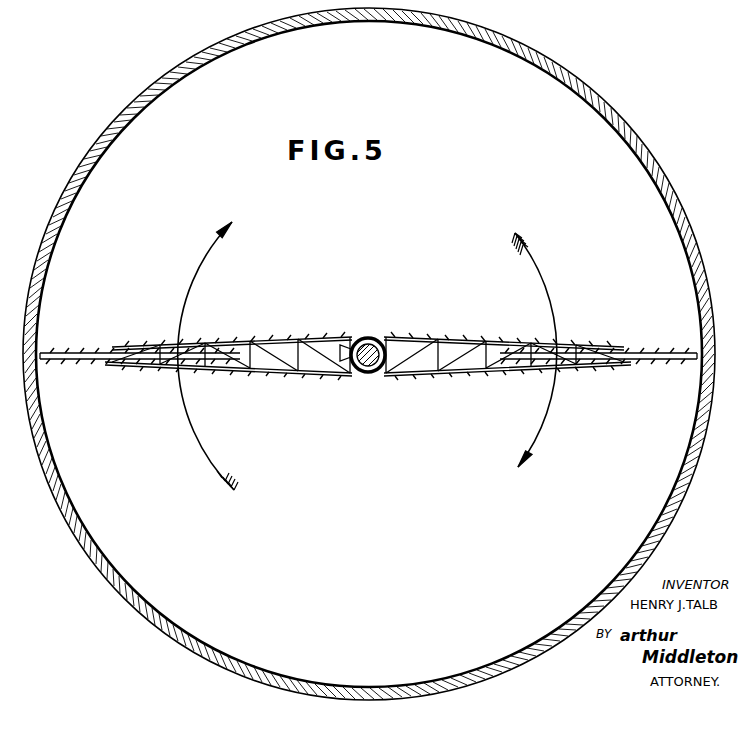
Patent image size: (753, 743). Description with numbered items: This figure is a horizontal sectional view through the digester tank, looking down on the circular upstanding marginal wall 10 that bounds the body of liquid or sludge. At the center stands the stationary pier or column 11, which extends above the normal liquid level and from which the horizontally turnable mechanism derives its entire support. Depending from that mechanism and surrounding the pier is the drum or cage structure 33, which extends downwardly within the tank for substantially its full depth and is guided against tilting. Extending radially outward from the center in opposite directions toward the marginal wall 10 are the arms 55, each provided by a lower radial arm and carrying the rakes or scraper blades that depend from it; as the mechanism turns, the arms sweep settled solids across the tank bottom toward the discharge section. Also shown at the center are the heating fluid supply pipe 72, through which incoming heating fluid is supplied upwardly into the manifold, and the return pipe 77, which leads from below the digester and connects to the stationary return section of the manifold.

The upstanding marginal wall 10 is at (517, 52).
The arm 55 is at (82, 356).
The heating fluid supply pipe 72 is at (356, 364).
The stationary central pier 11 is at (379, 339).
The drum or cage structure 33 is at (381, 367).
The return pipe 77 is at (356, 348).